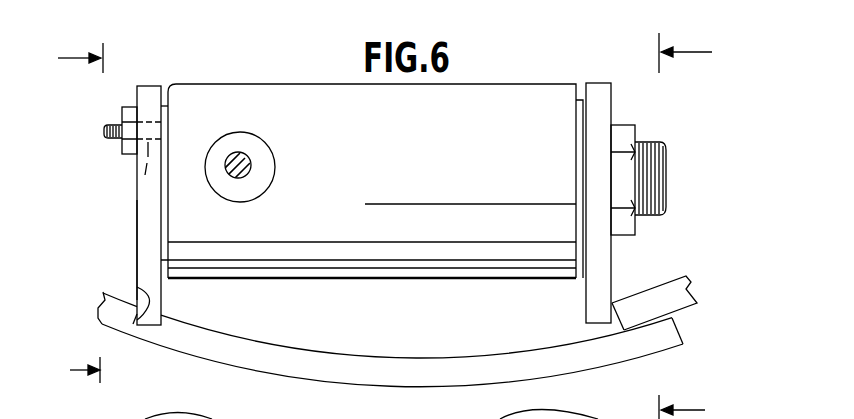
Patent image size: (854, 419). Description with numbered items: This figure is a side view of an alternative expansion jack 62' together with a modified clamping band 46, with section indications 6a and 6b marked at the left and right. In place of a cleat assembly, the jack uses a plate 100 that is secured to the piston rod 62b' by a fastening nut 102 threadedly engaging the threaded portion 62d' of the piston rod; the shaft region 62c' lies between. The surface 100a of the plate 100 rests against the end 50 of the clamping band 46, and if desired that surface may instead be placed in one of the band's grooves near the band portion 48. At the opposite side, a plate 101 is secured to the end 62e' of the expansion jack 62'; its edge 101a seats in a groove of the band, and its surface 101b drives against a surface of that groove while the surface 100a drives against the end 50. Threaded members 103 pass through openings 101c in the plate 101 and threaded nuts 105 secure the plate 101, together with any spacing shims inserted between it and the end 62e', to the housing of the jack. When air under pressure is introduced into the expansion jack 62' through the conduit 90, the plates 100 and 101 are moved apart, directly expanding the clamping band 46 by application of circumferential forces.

The expansion jack 62' is at (368, 142).
The end of expansion jack 62e' is at (199, 78).
The piston rod 62b' is at (570, 162).
The housing boss 62c' is at (258, 158).
The threaded portion of piston rod 62d' is at (681, 171).
The conduit 90 is at (250, 171).
The plate 101 is at (148, 85).
The edge of plate 101a is at (138, 290).
The surface of plate 101b is at (137, 242).
The openings 101c is at (137, 182).
The threaded members 103 is at (104, 131).
The threaded nuts 105 is at (122, 107).
The plate 100 is at (587, 297).
The surface of plate 100a is at (621, 298).
The fastening nut 102 is at (621, 125).
The clamping band 46 is at (430, 387).
The band end 48 is at (683, 330).
The end of clamping band 50 is at (623, 331).
The section line 6a is at (66, 213).
The section line 6b is at (697, 226).